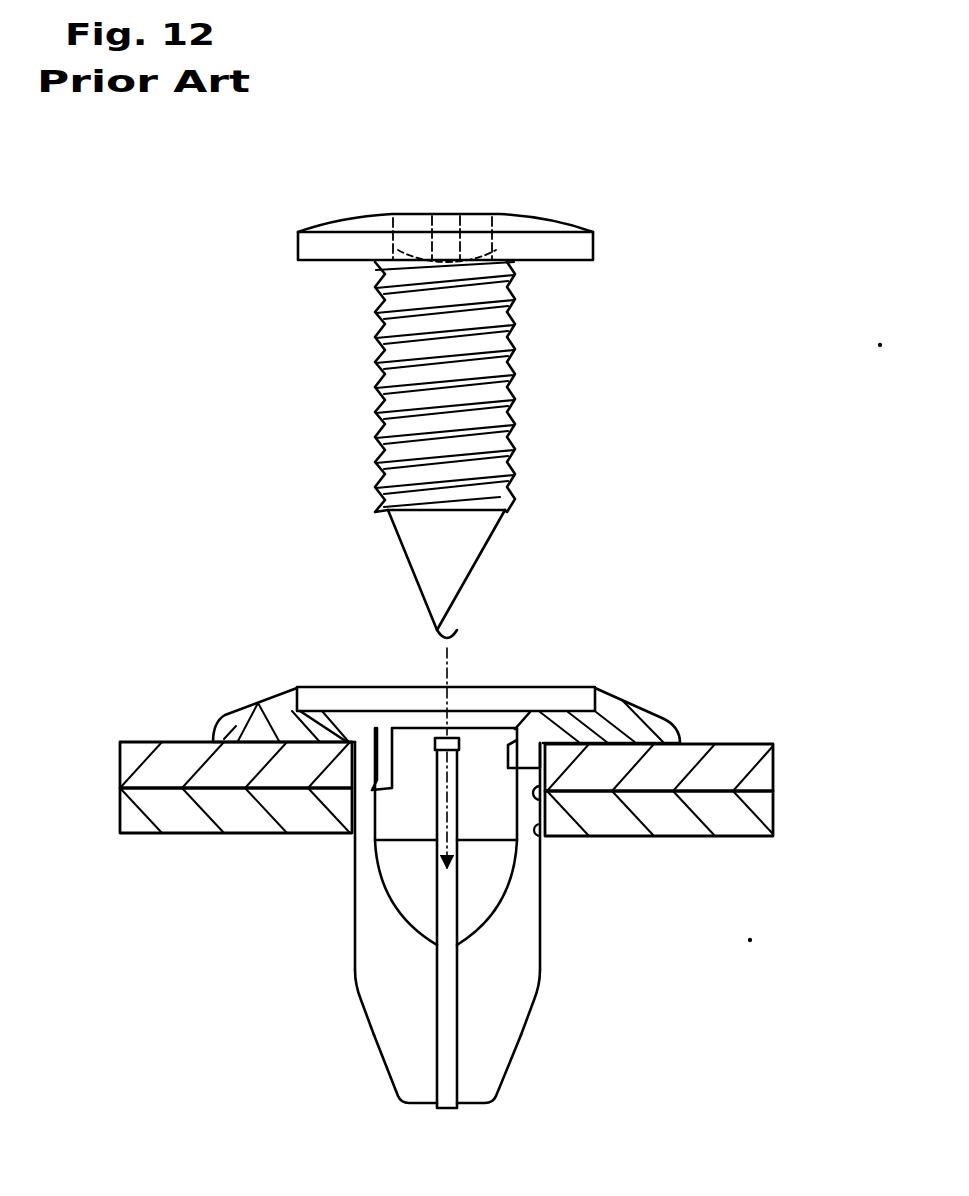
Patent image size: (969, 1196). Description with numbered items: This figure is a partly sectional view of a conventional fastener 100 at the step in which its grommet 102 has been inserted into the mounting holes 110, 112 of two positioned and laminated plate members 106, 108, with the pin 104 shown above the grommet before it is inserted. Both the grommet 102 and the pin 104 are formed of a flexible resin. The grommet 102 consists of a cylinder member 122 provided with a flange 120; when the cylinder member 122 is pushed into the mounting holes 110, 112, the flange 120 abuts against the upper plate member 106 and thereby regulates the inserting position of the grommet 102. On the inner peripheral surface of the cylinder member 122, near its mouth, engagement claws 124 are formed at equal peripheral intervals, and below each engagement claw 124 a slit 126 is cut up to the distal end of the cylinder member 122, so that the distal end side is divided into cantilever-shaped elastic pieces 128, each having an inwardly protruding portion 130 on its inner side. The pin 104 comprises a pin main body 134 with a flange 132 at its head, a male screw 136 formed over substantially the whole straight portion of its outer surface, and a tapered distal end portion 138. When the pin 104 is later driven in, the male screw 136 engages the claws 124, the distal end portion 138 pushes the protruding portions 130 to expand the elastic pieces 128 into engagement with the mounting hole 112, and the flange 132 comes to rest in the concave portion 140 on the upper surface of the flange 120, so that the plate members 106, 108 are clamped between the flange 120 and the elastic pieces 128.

The fastener 100 is at (680, 217).
The grommet 102 is at (646, 700).
The pin 104 is at (552, 220).
The plate member 106 is at (748, 755).
The plate member 108 is at (757, 831).
The mounting hole 110 is at (538, 798).
The mounting hole 112 is at (532, 840).
The flange 120 is at (265, 713).
The cylinder member 122 is at (354, 883).
The engagement claw 124 is at (462, 742).
The slit 126 is at (505, 1045).
The elastic piece 128 is at (537, 1000).
The protruding portion 130 is at (473, 927).
The flange 132 is at (362, 231).
The pin main body 134 is at (390, 519).
The male screw 136 is at (378, 405).
The distal end portion 138 is at (476, 562).
The concave portion 140 is at (585, 711).